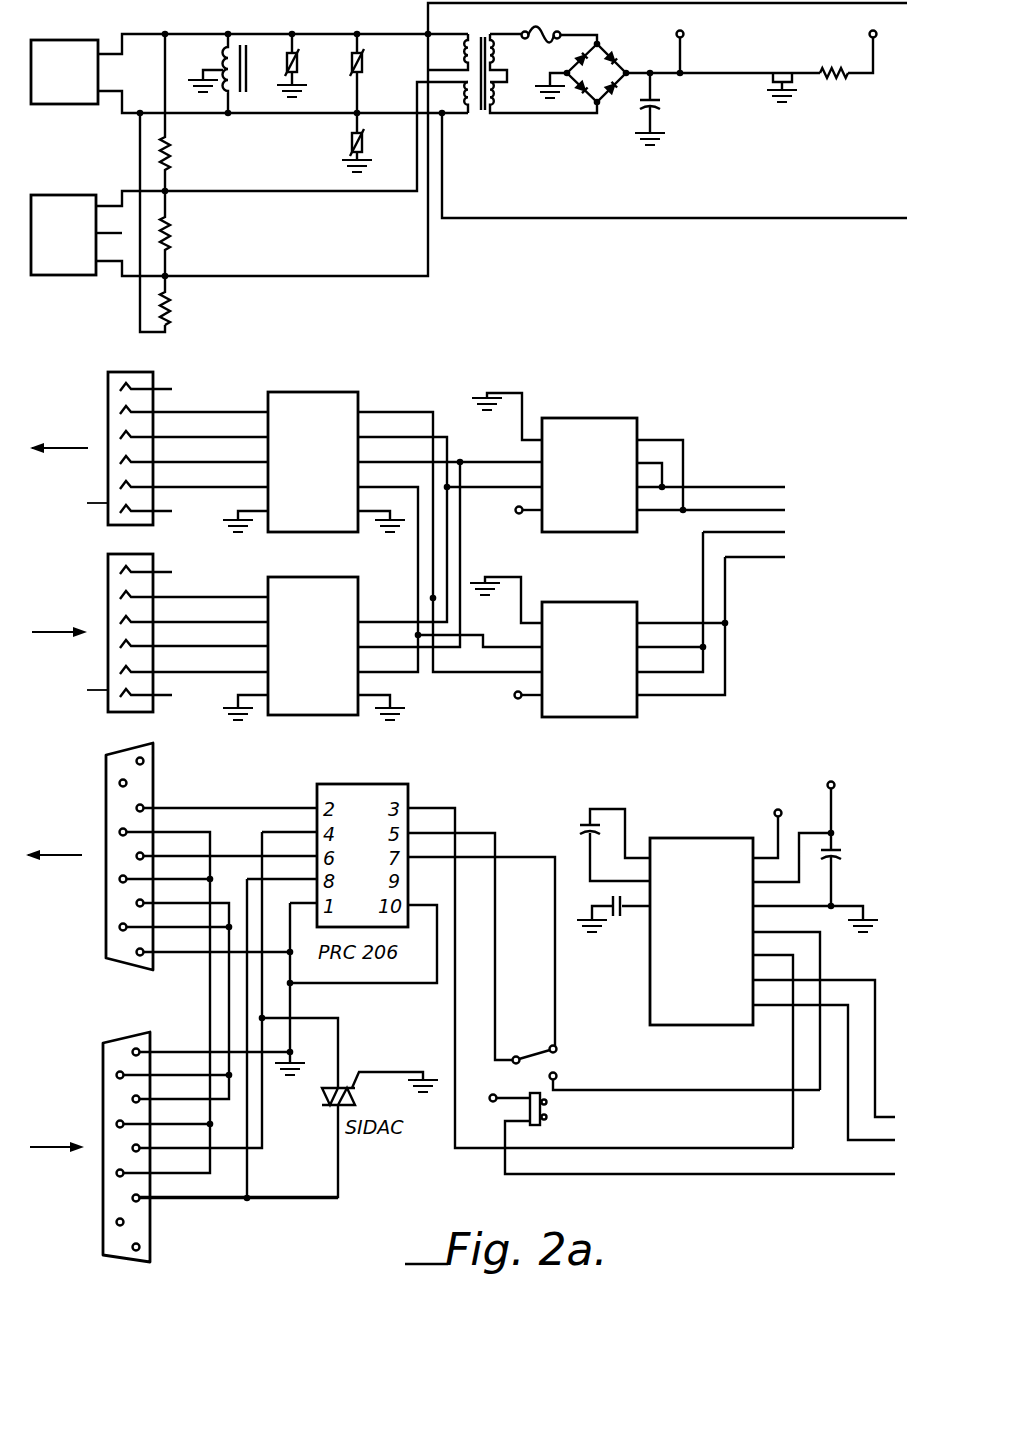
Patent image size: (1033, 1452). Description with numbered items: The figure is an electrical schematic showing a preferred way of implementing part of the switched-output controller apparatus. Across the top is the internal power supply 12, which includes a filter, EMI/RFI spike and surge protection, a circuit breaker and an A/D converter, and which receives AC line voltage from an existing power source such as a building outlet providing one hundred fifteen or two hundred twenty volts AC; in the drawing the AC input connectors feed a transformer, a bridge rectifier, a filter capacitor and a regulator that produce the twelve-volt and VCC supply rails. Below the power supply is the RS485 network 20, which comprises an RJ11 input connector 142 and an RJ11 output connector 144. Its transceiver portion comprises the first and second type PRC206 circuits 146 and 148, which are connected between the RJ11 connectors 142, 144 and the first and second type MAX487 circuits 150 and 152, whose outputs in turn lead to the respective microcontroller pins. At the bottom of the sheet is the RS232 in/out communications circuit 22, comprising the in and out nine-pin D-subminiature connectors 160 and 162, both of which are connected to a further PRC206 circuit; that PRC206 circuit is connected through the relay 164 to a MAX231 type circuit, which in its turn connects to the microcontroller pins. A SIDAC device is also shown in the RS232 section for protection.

The internal power supply 12 is at (504, 243).
The RS485 network 20 is at (556, 374).
The RS232 in/out communications circuit 22 is at (544, 814).
The RJ11 input connector 142 is at (100, 568).
The RJ11 output connector 144 is at (100, 372).
The first type PRC206 circuit 146 is at (352, 577).
The second type PRC206 circuit 148 is at (337, 392).
The first type MAX487 circuit 150 is at (617, 602).
The second type MAX487 circuit 152 is at (626, 418).
The in DB-9 connector 160 is at (93, 1059).
The out DB-9 connector 162 is at (94, 766).
The relay 164 is at (541, 1041).